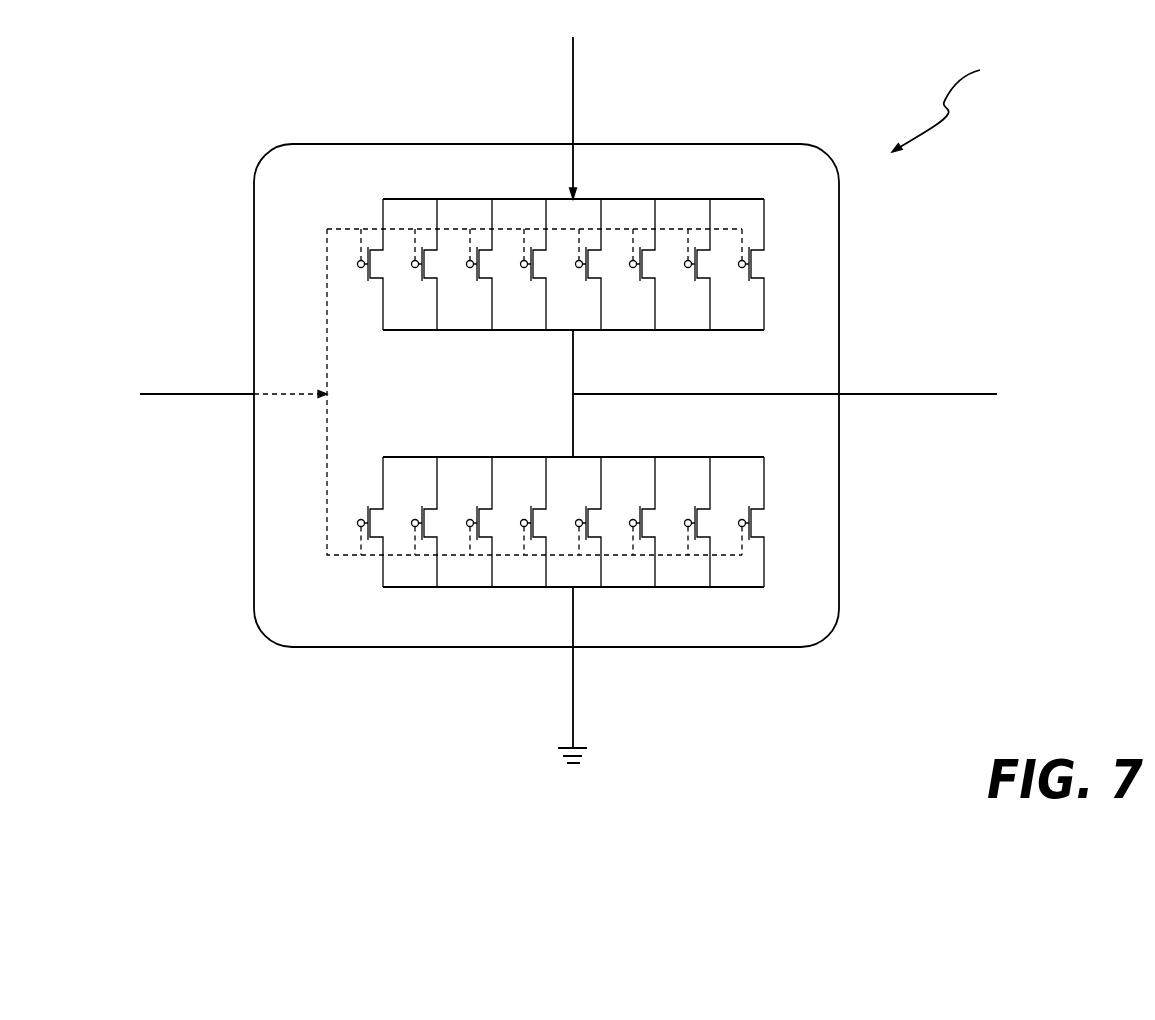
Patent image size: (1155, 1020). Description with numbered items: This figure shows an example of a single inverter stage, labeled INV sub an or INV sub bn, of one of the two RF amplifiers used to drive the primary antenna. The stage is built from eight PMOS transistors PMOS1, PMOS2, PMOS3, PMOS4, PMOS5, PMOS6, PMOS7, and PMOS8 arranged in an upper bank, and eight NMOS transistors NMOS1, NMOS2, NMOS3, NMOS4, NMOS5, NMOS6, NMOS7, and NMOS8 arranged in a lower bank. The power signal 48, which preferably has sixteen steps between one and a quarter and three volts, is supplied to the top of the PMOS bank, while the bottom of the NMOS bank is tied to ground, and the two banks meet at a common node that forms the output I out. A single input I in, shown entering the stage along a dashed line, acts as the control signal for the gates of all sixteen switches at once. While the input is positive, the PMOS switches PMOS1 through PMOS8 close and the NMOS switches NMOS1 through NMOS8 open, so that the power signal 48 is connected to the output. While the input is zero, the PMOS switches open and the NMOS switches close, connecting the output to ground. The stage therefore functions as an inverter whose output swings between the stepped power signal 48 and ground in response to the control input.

The power signal 48 is at (574, 70).
The first PMOS transistor PMOS1 is at (368, 247).
The second PMOS transistor PMOS2 is at (422, 247).
The third PMOS transistor PMOS3 is at (477, 247).
The fourth PMOS transistor PMOS4 is at (531, 247).
The fifth PMOS transistor PMOS5 is at (586, 247).
The sixth PMOS transistor PMOS6 is at (640, 247).
The seventh PMOS transistor PMOS7 is at (695, 247).
The eighth PMOS transistor PMOS8 is at (749, 247).
The first NMOS transistor NMOS1 is at (368, 540).
The second NMOS transistor NMOS2 is at (422, 540).
The third NMOS transistor NMOS3 is at (477, 540).
The fourth NMOS transistor NMOS4 is at (531, 540).
The fifth NMOS transistor NMOS5 is at (586, 540).
The sixth NMOS transistor NMOS6 is at (640, 540).
The seventh NMOS transistor NMOS7 is at (695, 540).
The eighth NMOS transistor NMOS8 is at (749, 540).